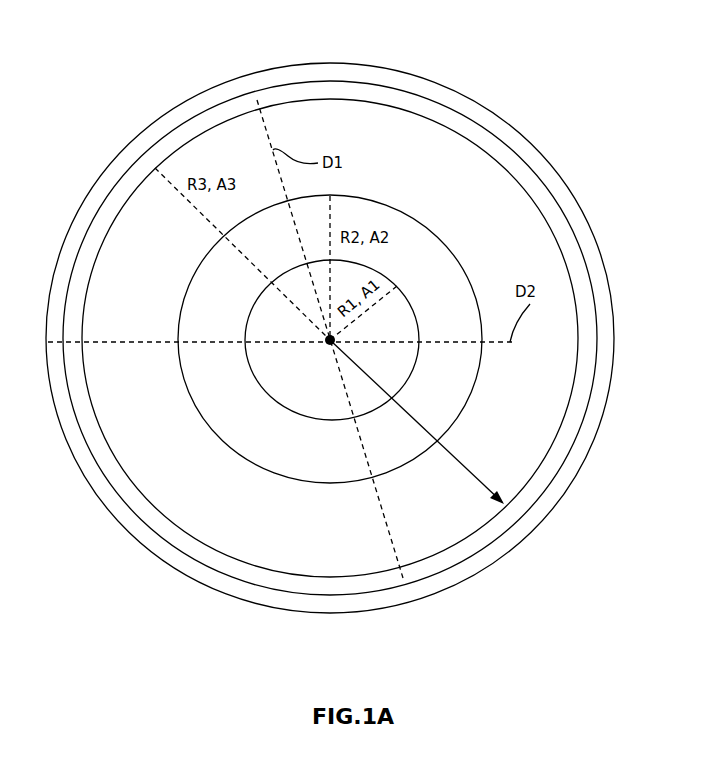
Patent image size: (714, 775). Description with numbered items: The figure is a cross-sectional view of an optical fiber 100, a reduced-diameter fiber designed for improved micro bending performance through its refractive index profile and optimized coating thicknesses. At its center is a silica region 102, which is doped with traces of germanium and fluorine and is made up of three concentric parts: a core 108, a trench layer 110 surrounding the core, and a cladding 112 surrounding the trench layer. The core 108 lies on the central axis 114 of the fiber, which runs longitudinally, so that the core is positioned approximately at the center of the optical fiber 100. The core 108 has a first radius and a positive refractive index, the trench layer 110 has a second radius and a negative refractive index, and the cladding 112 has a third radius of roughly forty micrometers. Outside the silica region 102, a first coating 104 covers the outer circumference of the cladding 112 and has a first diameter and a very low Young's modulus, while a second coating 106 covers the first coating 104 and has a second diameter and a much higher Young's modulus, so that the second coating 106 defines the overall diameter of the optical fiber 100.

The optical fiber 100 is at (78, 80).
The silica region 102 is at (485, 478).
The first coating 104 is at (575, 258).
The second coating 106 is at (565, 198).
The core 108 is at (326, 401).
The trench layer 110 is at (269, 444).
The cladding 112 is at (209, 506).
The central axis 114 is at (326, 348).